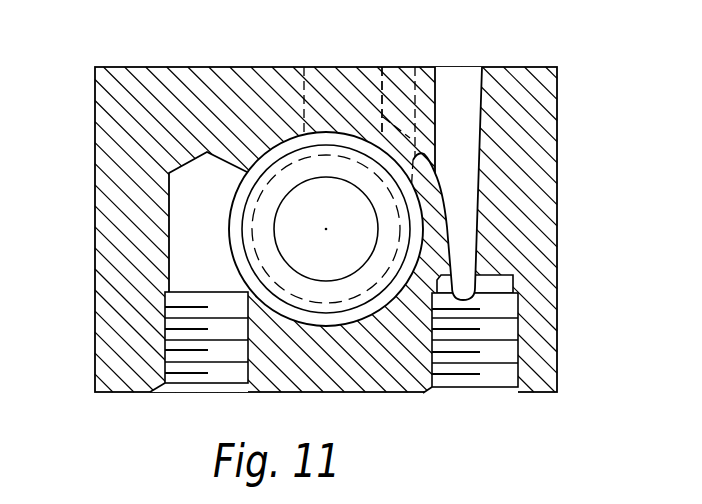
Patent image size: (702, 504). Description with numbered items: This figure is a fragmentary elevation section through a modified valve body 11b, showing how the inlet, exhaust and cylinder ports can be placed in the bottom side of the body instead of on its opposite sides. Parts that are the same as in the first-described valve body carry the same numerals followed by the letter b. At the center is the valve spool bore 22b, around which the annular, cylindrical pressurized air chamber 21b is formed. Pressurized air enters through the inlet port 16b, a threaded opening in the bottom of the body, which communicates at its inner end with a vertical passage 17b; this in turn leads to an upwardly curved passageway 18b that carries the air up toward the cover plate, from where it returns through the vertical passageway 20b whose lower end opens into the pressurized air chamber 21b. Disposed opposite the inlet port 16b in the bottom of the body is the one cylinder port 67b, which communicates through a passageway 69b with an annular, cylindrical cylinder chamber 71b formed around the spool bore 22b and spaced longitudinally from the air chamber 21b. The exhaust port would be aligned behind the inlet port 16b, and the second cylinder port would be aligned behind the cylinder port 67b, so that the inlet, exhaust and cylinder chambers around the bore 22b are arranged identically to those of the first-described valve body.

The modified valve body 11b is at (110, 326).
The inlet port 16b is at (512, 350).
The vertical passage 17b is at (480, 190).
The upwardly curved passageway 18b is at (389, 84).
The vertical passageway 20b is at (309, 93).
The pressurized air chamber 21b is at (277, 168).
The valve spool bore 22b is at (313, 272).
The cylinder port 67b is at (168, 360).
The passageway 69b is at (170, 238).
The cylinder chamber 71b is at (232, 202).